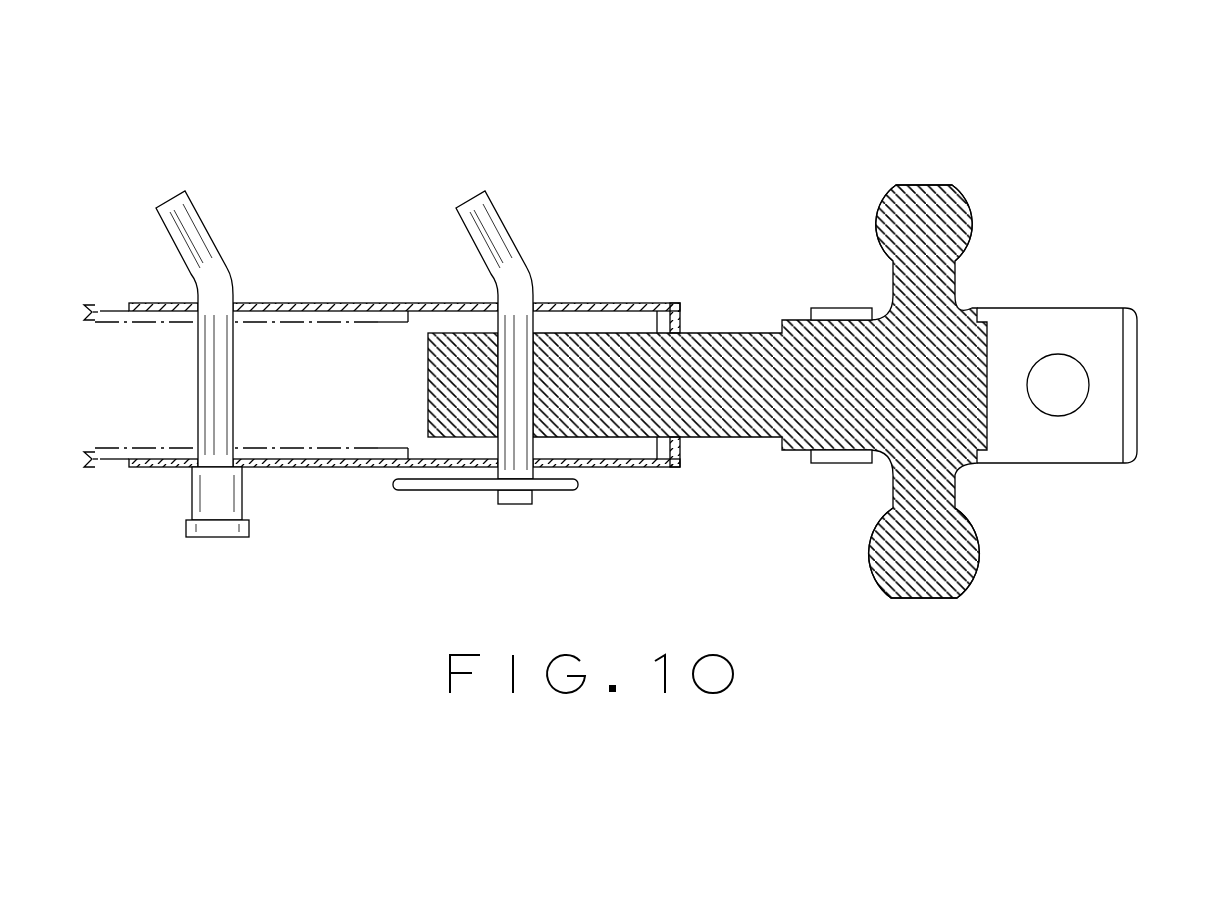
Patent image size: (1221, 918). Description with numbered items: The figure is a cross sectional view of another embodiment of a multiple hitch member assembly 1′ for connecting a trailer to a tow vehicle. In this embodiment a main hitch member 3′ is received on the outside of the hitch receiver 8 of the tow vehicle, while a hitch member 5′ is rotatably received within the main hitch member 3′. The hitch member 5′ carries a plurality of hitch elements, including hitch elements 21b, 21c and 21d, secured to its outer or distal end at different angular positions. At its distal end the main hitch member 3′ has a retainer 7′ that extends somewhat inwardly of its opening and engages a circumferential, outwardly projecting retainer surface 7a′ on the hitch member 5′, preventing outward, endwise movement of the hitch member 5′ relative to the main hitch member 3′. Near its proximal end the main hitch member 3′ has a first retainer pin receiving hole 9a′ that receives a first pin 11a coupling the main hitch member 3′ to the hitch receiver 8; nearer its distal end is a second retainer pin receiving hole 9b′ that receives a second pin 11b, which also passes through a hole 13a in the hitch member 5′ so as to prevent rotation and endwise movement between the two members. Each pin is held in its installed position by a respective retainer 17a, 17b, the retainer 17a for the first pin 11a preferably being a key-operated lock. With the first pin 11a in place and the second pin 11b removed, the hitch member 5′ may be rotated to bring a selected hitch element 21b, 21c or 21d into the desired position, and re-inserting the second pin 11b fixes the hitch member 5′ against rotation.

The multiple hitch member assembly 1′ is at (868, 102).
The main hitch member 3′ is at (328, 294).
The hitch member 5′ is at (715, 325).
The retainer 7′ is at (683, 443).
The retainer surface 7a′ is at (657, 443).
The hitch receiver 8 is at (111, 330).
The first retainer pin receiving hole 9a′ is at (197, 300).
The second retainer pin receiving hole 9b′ is at (560, 303).
The first pin 11a is at (223, 255).
The second pin 11b is at (503, 228).
The hole 13a is at (490, 413).
The retainer 17a is at (242, 497).
The retainer 17b is at (470, 492).
The hitch element 21b is at (972, 205).
The hitch element 21c is at (975, 563).
The hitch element 21d is at (1137, 397).